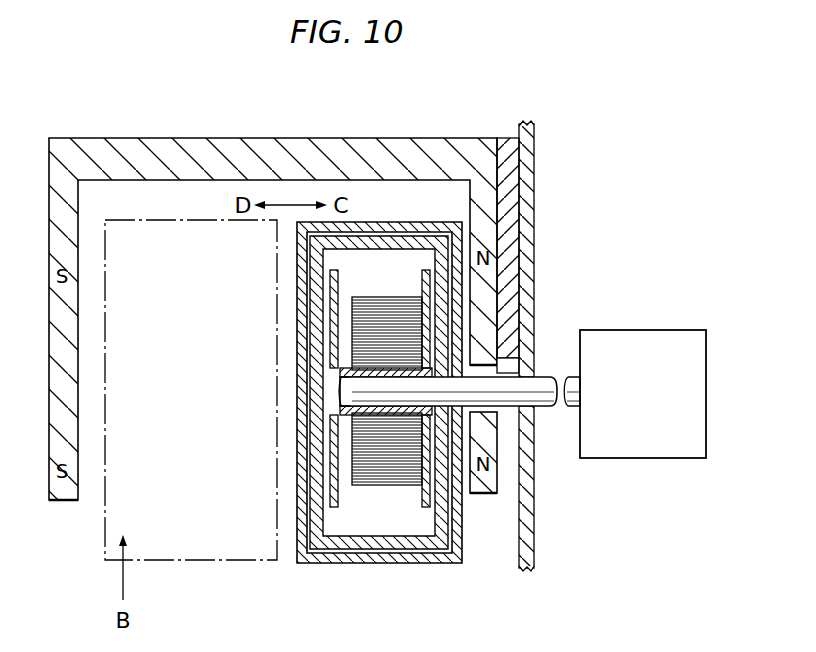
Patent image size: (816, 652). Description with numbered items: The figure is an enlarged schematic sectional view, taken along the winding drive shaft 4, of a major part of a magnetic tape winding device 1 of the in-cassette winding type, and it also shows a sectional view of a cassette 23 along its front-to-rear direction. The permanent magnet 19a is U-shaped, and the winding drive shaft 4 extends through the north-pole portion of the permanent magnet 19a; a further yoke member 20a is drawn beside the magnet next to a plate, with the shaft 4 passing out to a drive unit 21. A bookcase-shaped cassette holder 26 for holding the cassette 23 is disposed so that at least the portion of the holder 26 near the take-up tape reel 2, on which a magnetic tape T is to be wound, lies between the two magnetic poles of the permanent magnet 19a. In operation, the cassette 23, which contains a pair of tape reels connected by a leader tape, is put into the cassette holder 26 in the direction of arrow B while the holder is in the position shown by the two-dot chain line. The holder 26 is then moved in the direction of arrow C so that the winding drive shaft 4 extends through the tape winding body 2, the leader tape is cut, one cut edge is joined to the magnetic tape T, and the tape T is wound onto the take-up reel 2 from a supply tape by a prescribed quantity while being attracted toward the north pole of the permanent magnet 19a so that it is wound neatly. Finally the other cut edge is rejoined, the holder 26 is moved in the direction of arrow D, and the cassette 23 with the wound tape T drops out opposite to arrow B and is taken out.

The permanent magnet 19a is at (366, 147).
The yoke plate 20a is at (508, 192).
The magnetic tape winding device 1 is at (525, 542).
The cassette holder 26 is at (294, 557).
The cassette 23 is at (335, 541).
The take-up tape reel 2 is at (344, 499).
The magnetic tape T is at (404, 481).
The winding drive shaft 4 is at (538, 381).
The motor 21 is at (646, 341).